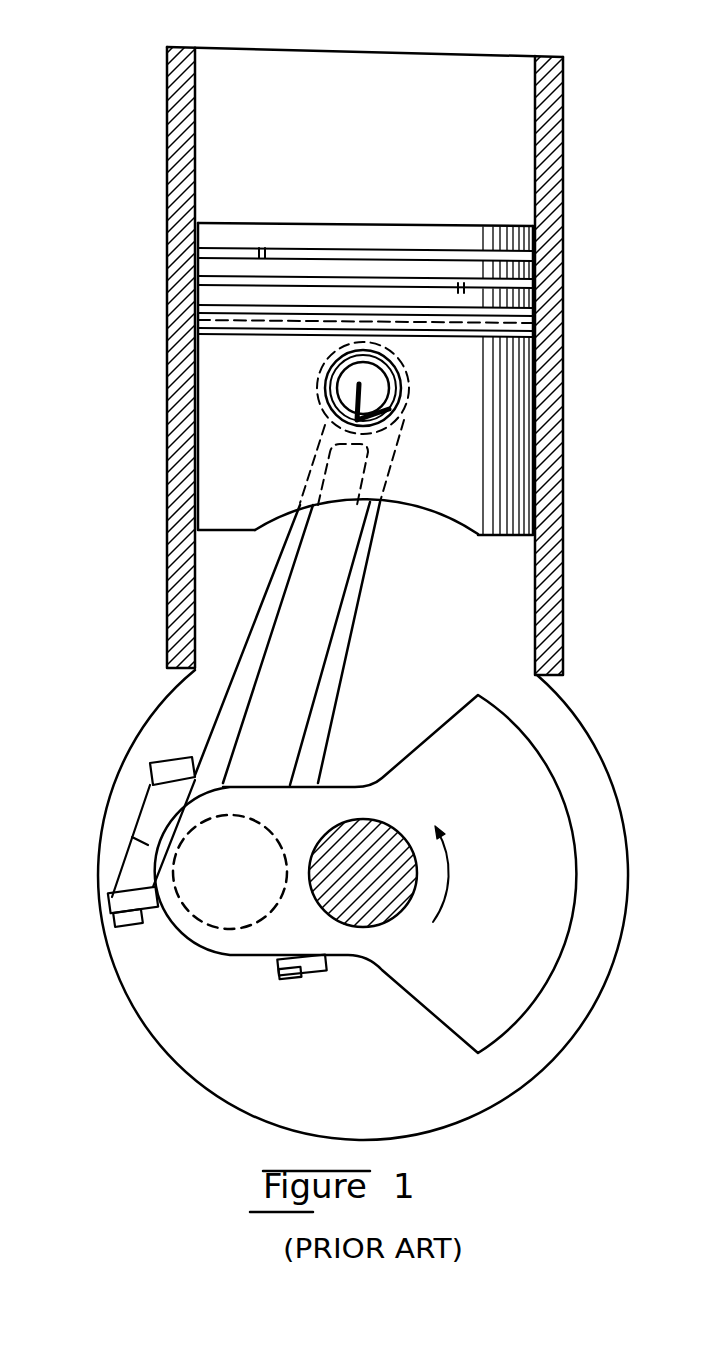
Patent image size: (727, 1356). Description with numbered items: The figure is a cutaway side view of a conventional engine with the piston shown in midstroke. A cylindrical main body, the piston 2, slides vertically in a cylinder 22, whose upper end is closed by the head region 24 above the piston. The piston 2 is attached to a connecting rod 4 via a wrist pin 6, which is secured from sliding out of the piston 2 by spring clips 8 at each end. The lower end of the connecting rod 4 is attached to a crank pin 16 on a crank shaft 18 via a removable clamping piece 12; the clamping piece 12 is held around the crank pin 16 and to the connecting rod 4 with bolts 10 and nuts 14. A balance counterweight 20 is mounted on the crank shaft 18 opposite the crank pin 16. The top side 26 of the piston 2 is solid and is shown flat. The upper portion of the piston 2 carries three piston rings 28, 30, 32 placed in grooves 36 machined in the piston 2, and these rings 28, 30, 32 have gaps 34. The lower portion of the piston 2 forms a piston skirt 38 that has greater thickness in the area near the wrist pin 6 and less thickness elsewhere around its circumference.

The piston 2 is at (530, 415).
The connecting rod 4 is at (340, 622).
The wrist pin 6 is at (340, 377).
The spring clips 8 is at (372, 399).
The bolts 10 is at (148, 766).
The clamping piece 12 is at (135, 845).
The nuts 14 is at (118, 906).
The crank pin 16 is at (213, 903).
The crank shaft 18 is at (357, 914).
The balance counterweight 20 is at (538, 762).
The cylinder 22 is at (358, 354).
The cylinder head 24 is at (528, 66).
The top side 26 is at (317, 221).
The piston ring 28 is at (205, 250).
The piston ring 30 is at (205, 282).
The piston ring 32 is at (202, 316).
The gaps 34 is at (268, 248).
The grooves 36 is at (540, 285).
The piston skirt 38 is at (205, 438).